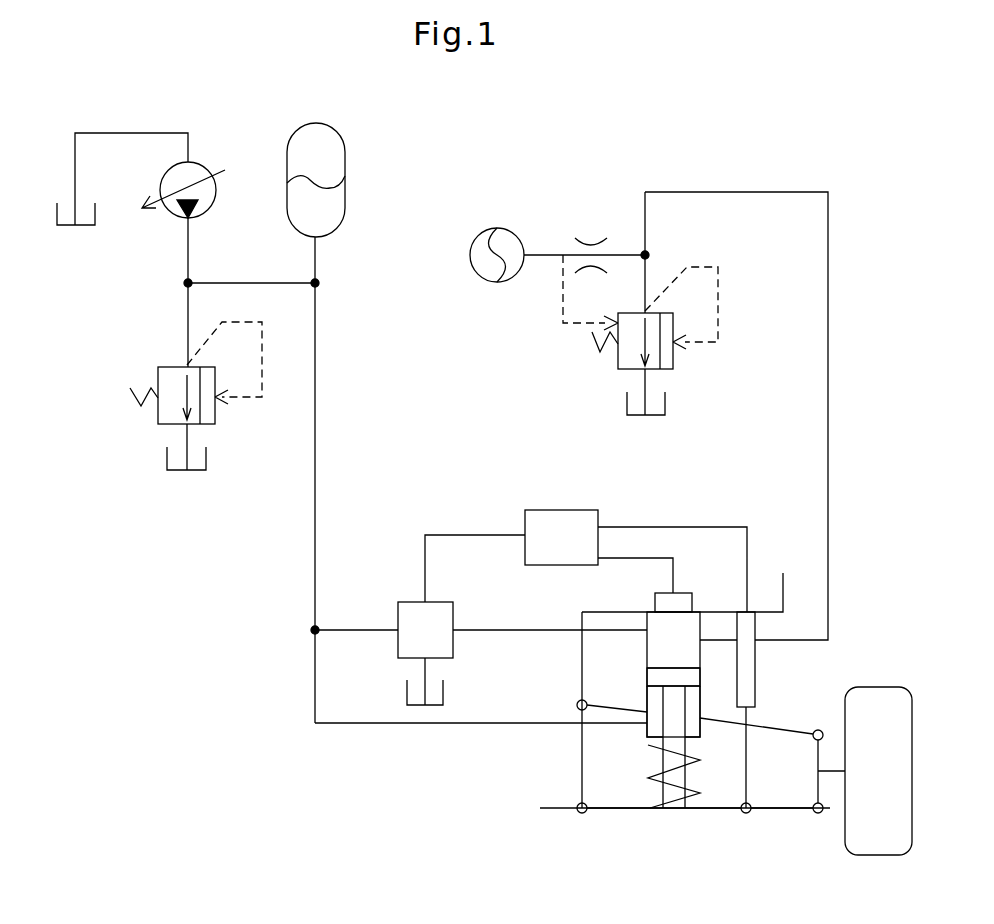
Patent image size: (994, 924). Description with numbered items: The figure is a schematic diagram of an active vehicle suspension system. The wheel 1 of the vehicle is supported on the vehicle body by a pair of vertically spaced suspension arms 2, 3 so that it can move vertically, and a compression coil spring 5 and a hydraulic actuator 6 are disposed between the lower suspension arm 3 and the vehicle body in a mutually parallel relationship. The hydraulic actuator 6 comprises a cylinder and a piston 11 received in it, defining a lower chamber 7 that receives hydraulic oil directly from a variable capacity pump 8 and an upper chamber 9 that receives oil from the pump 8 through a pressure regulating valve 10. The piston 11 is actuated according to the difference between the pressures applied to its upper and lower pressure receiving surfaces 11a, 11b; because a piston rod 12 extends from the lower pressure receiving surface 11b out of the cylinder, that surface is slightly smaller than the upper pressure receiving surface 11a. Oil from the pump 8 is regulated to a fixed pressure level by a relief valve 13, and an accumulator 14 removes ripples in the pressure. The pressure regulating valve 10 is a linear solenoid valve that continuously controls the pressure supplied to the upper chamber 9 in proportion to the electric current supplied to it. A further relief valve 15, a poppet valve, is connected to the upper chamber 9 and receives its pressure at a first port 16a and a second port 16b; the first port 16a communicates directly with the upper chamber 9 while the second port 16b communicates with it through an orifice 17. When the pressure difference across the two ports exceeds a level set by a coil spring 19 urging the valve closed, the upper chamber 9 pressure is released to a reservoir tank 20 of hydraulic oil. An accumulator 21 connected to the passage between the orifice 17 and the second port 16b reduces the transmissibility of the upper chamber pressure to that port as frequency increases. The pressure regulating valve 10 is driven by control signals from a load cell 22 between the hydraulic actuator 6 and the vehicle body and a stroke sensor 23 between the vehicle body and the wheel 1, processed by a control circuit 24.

The wheel 1 is at (880, 857).
The suspension arm 2 is at (780, 726).
The lower suspension arm 3 is at (782, 812).
The compression coil spring 5 is at (657, 790).
The hydraulic actuator 6 is at (633, 745).
The lower chamber 7 is at (685, 690).
The variable capacity pump 8 is at (206, 172).
The upper chamber 9 is at (673, 674).
The pressure regulating valve 10 is at (425, 630).
The piston 11 is at (695, 679).
The upper pressure receiving surface 11a is at (650, 668).
The lower pressure receiving surface 11b is at (650, 686).
The piston rod 12 is at (676, 800).
The relief valve 13 is at (226, 438).
The accumulator 14 is at (345, 157).
The relief valve 15 is at (611, 409).
The first port 16a is at (680, 350).
The second port 16b is at (593, 292).
The orifice 17 is at (590, 245).
The coil spring 19 is at (592, 337).
The reservoir tank 20 is at (82, 227).
The accumulator 21 is at (510, 283).
The load cell 22 is at (692, 590).
The stroke sensor 23 is at (749, 690).
The control circuit 24 is at (561, 537).